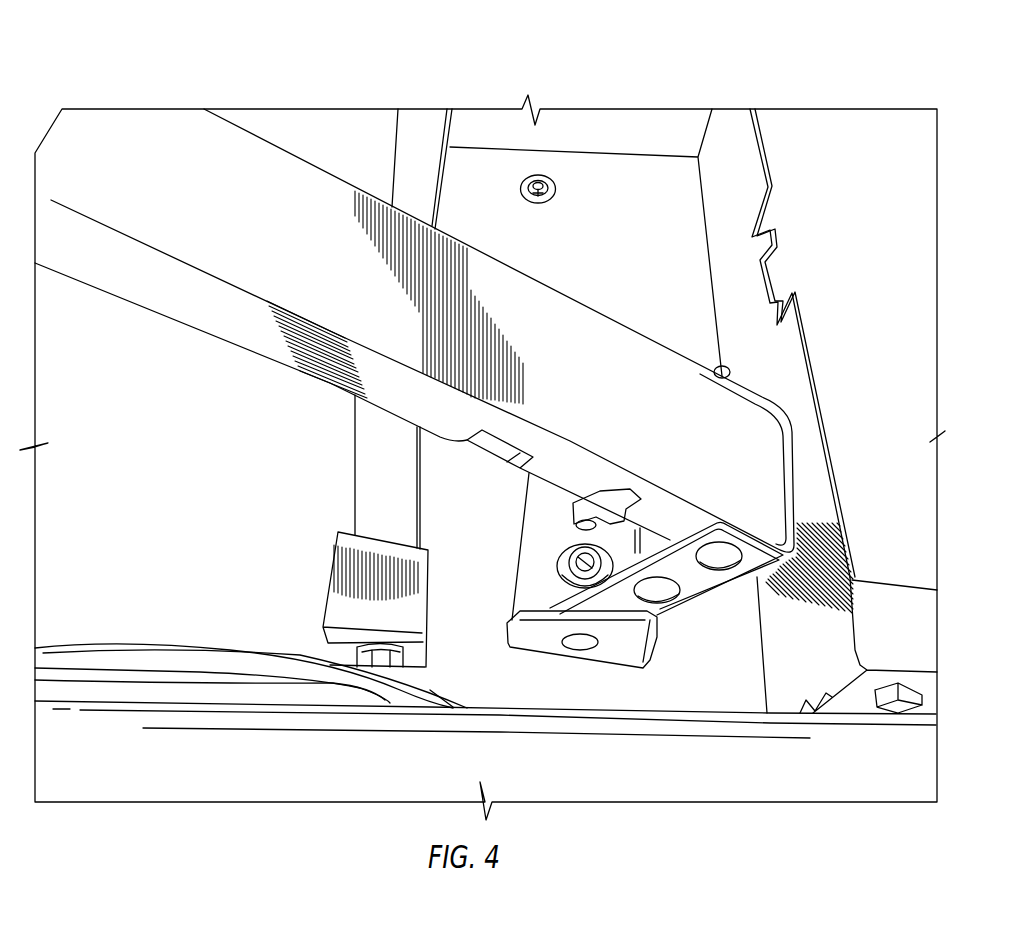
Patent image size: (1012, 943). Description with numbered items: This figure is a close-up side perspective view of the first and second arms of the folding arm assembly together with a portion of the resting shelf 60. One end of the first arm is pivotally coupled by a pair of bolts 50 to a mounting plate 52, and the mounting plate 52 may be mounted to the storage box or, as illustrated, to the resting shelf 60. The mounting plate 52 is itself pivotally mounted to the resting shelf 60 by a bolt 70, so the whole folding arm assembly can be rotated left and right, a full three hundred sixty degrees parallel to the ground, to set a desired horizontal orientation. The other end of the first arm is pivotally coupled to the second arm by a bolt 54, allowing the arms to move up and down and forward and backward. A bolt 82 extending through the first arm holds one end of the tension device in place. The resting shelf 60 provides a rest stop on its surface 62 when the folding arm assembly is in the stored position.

The resting shelf 60 is at (650, 182).
The surface 62 is at (340, 583).
The mounting plate 52 is at (537, 520).
The bolt 70 is at (563, 557).
The bolt 54 is at (740, 550).
The bolt 82 is at (685, 592).
The bolts 50 is at (580, 650).